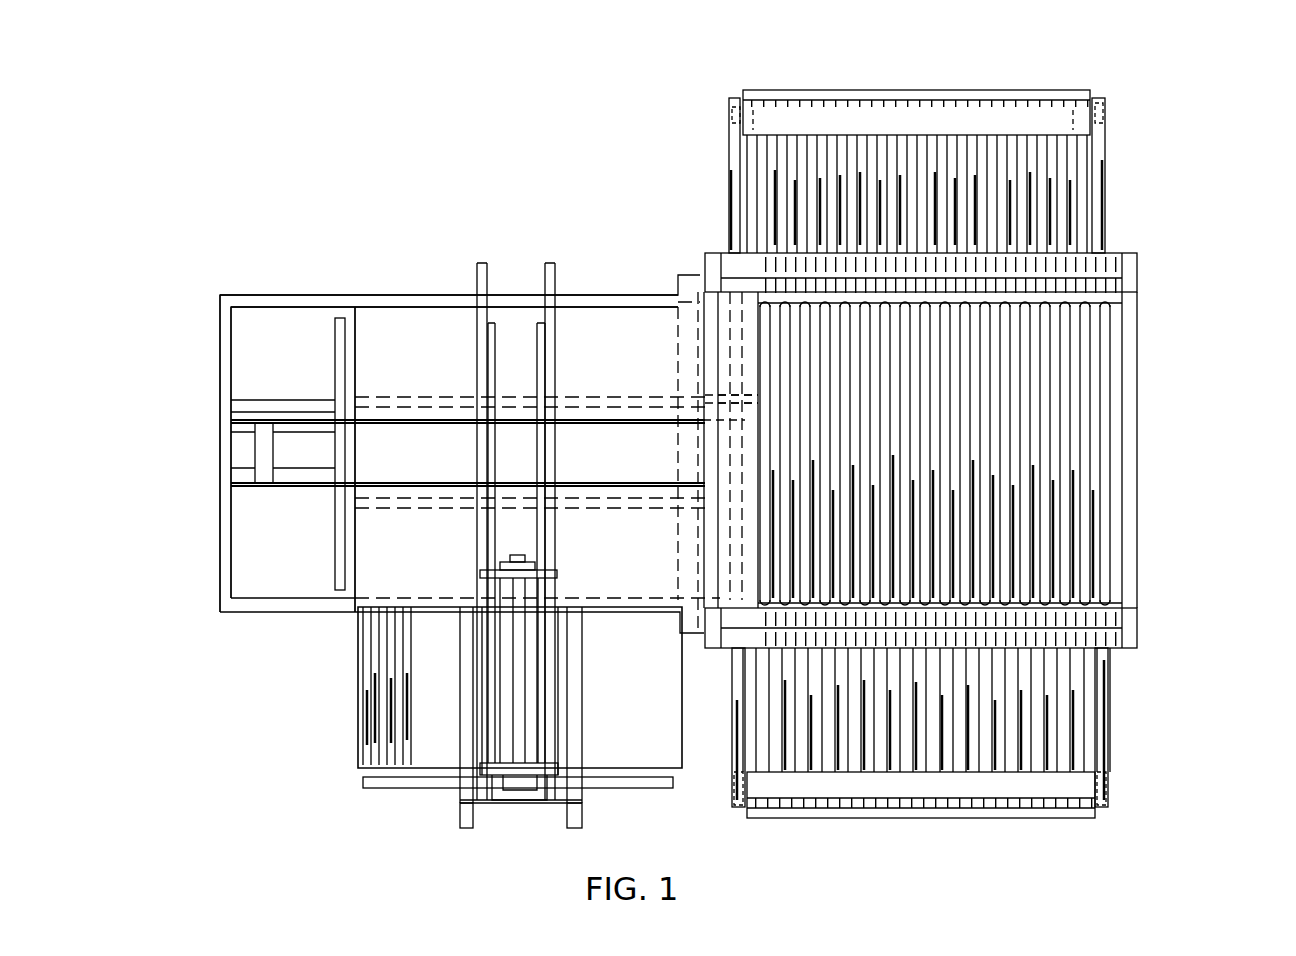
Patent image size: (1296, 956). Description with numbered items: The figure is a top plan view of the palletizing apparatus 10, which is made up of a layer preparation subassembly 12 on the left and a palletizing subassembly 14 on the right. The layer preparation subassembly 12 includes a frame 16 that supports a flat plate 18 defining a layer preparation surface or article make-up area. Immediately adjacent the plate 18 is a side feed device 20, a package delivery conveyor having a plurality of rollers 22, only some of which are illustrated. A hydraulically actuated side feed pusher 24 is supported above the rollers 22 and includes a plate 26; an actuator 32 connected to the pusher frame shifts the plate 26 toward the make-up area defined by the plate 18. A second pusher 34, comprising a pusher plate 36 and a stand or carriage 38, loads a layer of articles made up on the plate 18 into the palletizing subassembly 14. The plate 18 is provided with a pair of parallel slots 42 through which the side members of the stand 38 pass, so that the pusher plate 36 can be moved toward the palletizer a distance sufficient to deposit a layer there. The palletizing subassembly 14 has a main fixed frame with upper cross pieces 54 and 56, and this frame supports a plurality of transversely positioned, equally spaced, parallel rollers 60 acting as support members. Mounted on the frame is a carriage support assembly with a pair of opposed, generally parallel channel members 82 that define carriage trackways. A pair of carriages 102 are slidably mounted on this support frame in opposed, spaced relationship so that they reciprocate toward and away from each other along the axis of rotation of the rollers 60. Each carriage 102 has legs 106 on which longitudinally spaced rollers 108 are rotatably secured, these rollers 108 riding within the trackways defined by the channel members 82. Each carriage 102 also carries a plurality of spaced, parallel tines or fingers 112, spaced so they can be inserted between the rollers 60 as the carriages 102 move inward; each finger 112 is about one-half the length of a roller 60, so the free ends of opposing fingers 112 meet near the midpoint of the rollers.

The palletizing apparatus 10 is at (262, 185).
The layer preparation subassembly 12 is at (185, 412).
The palletizing subassembly 14 is at (1182, 170).
The frame 16 is at (335, 293).
The flat plate 18 is at (417, 332).
The side feed device 20 is at (330, 755).
The rollers 22 is at (370, 653).
The side feed pusher 24 is at (465, 742).
The plate 26 is at (622, 790).
The actuator 32 is at (518, 633).
The second pusher 34 is at (247, 352).
The pusher plate 36 is at (335, 385).
The stand 38 is at (262, 450).
The parallel slots 42 is at (403, 420).
The upper cross piece 54 is at (1113, 265).
The upper cross piece 56 is at (712, 352).
The rollers 60 is at (1108, 370).
The channel members 82 is at (740, 105).
The carriages 102 is at (732, 762).
The legs 106 is at (750, 197).
The rollers 108 is at (735, 120).
The tines or fingers 112 is at (1025, 733).